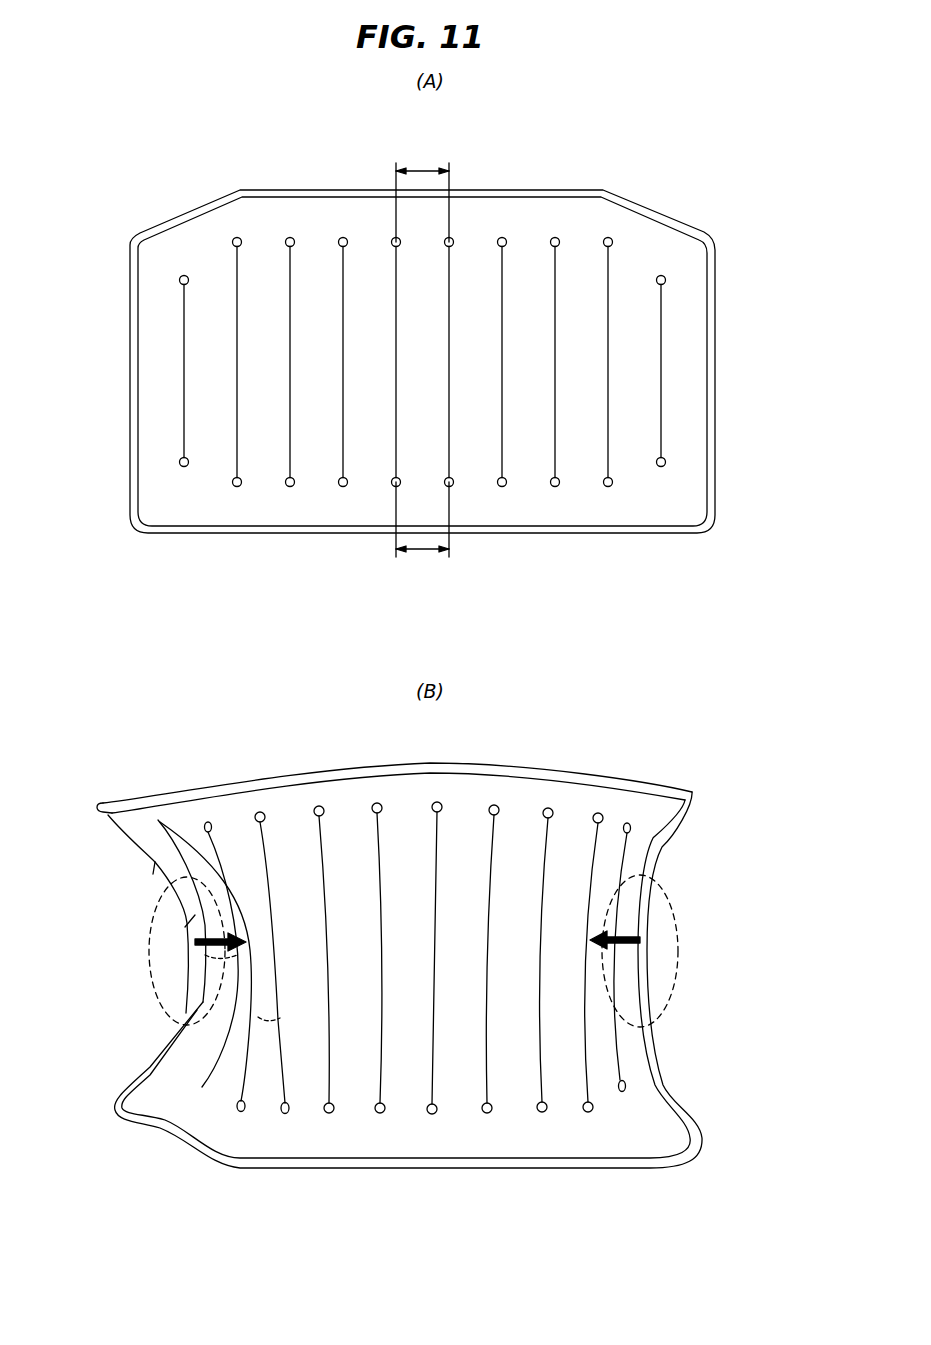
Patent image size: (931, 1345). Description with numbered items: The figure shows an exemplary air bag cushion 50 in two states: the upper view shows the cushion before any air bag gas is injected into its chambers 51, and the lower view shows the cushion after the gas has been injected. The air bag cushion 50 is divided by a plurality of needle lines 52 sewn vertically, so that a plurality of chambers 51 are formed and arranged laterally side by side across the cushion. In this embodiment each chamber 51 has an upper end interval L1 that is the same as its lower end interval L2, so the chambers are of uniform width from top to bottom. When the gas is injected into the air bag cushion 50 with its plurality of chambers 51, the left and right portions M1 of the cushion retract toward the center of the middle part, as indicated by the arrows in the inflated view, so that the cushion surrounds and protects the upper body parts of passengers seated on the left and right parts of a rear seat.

The air bag cushion 50 is at (569, 197).
The chamber 51 is at (317, 260).
The needle line 52 is at (610, 277).
The upper end interval L1 is at (422, 191).
The lower end interval L2 is at (422, 533).
The left and right portions M1 is at (148, 950).